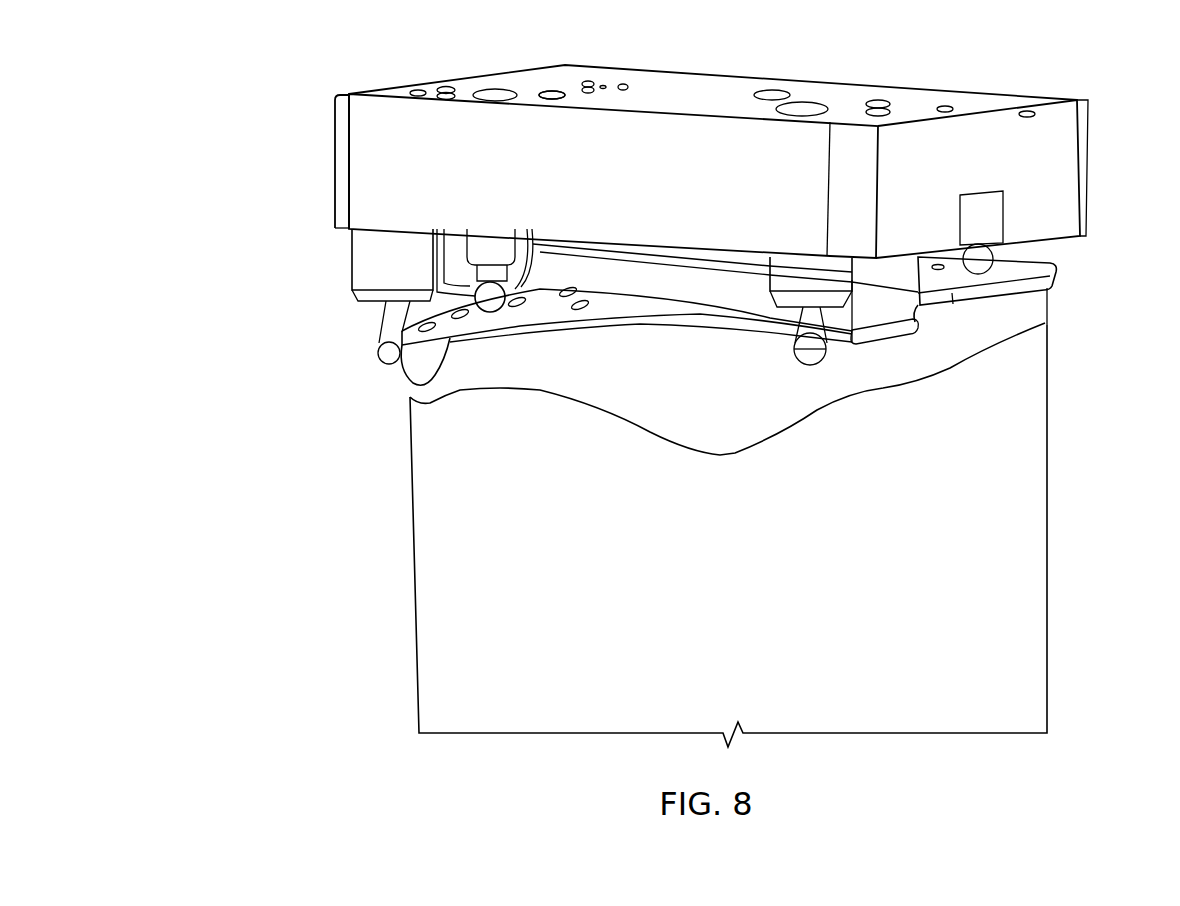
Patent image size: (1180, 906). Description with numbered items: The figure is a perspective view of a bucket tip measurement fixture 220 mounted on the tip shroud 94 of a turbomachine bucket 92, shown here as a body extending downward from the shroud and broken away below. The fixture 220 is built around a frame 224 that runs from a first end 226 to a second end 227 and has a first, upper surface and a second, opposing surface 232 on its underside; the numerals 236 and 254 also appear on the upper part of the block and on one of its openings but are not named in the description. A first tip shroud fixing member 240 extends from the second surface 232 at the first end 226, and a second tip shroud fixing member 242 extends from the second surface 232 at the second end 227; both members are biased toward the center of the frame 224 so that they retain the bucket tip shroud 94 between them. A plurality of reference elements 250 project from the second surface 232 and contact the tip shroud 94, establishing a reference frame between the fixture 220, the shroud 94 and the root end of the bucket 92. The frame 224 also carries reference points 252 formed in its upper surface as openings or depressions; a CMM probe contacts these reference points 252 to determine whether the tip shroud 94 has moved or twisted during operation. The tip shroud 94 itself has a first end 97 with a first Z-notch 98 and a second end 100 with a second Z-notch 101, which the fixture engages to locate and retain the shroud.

The bucket tip measurement fixture 220 is at (286, 72).
The frame 224 is at (323, 155).
The first end 226 is at (333, 186).
The second end 227 is at (1062, 161).
The top face of block 236 is at (664, 78).
The reference points 252 is at (548, 82).
The aperture edge 254 is at (551, 104).
The second surface 232 is at (597, 254).
The second Z-notch 101 is at (452, 287).
The reference elements 250 is at (500, 313).
The first tip shroud fixing member 240 is at (364, 344).
The second end 100 is at (416, 316).
The second tip shroud fixing member 242 is at (821, 348).
The tip shroud 94 is at (394, 375).
The first end 97 is at (1036, 304).
The first Z-notch 98 is at (926, 304).
The turbomachine bucket 92 is at (399, 557).